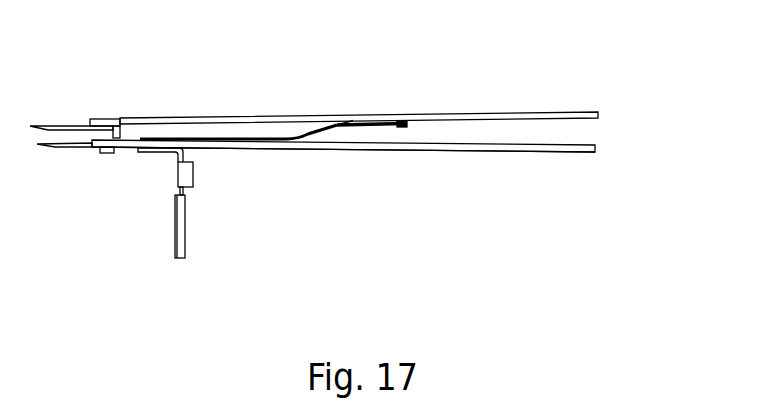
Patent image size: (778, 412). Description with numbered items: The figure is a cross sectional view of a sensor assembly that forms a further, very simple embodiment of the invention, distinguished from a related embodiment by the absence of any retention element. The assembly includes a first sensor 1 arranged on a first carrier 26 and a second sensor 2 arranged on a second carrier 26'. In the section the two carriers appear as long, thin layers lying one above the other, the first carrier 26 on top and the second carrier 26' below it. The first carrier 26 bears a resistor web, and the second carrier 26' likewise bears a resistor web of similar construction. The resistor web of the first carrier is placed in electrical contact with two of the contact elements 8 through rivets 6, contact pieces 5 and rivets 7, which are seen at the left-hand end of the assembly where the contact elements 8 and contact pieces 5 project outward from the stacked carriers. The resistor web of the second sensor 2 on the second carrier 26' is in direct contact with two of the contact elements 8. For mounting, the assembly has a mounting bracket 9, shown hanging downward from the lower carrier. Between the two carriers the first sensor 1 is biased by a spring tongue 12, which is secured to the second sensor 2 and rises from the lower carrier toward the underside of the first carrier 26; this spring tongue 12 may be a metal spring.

The first sensor 1 is at (291, 90).
The second sensor 2 is at (288, 170).
The contact piece 5 is at (59, 133).
The rivet 6 is at (108, 119).
The rivet 7 is at (107, 154).
The contact element 8 is at (72, 150).
The mounting bracket 9 is at (185, 218).
The spring tongue 12 is at (336, 127).
The first carrier 26 is at (408, 90).
The second carrier 26' is at (343, 186).